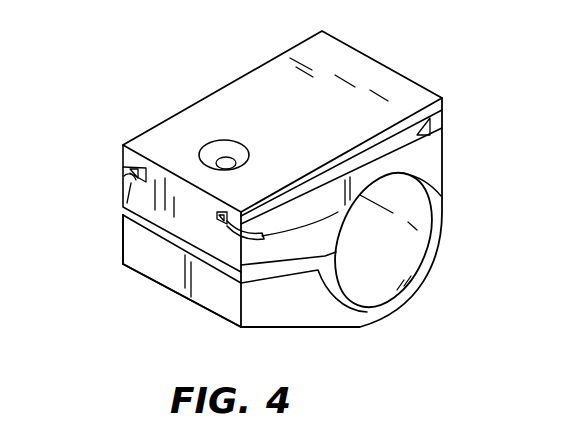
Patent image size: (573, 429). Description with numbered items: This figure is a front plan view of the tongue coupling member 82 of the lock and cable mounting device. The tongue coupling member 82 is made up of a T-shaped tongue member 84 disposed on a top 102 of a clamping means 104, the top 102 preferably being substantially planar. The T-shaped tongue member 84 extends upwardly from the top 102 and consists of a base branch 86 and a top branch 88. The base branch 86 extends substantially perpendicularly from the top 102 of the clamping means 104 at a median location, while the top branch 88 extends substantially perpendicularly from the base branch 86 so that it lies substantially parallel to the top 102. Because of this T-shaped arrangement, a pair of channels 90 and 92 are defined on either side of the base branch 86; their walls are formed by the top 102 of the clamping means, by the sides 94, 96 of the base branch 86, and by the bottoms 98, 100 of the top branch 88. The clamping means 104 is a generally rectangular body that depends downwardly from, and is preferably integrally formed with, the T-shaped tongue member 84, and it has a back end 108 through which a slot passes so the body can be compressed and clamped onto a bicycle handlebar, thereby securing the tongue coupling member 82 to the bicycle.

The tongue coupling member 82 is at (451, 113).
The T-shaped tongue member 84 is at (254, 100).
The base branch 86 is at (122, 243).
The top branch 88 is at (174, 180).
The channel 90 is at (101, 159).
The channel 92 is at (251, 236).
The side of the base branch 94 is at (128, 208).
The side of the base branch 96 is at (186, 256).
The bottom of the top branch 98 is at (124, 168).
The bottom of the top branch 100 is at (333, 250).
The top of the clamping means 102 is at (122, 168).
The clamping means 104 is at (421, 290).
The back end 108 is at (154, 262).